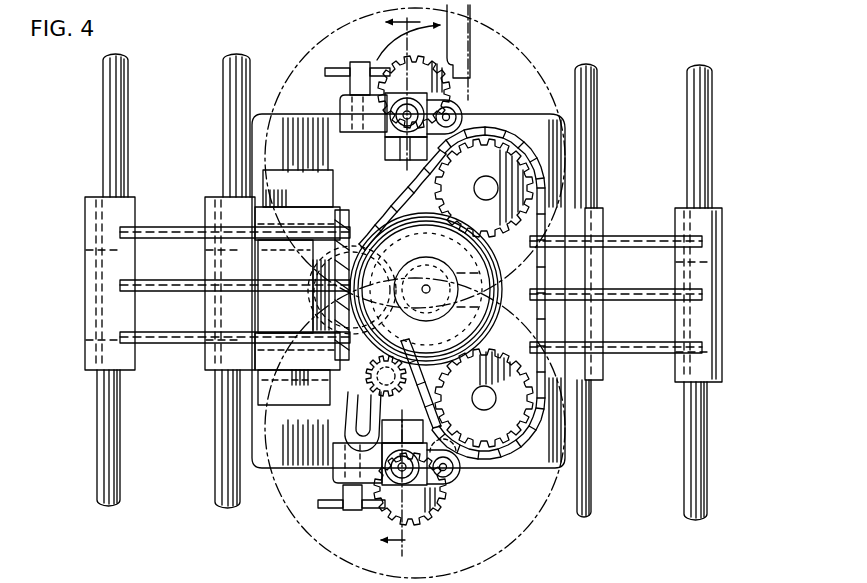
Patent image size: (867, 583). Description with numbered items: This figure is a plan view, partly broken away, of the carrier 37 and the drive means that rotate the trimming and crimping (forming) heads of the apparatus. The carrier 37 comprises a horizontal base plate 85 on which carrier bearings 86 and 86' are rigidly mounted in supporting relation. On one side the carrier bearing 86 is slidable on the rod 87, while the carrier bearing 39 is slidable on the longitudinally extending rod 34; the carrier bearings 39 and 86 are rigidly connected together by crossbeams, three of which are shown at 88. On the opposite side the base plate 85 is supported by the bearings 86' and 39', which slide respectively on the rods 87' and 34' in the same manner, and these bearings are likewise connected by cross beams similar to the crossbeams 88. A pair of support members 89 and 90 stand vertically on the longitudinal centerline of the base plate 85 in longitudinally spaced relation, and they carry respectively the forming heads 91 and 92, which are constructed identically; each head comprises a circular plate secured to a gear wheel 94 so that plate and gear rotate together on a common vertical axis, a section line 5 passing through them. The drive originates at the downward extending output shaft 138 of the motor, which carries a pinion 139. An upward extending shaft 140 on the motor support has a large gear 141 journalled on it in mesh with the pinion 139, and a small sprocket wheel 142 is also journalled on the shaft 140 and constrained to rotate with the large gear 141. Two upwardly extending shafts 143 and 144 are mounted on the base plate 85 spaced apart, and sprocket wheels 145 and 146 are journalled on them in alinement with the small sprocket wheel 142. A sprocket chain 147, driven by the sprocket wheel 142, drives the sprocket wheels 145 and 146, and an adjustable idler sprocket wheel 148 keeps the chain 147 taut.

The section line 5— 5 is at (398, 283).
The longitudinally extending rod 34 is at (94, 280).
The rod 34' is at (680, 292).
The carrier 37 is at (402, 293).
The carrier bearing 39 is at (92, 280).
The carrier bearing 39' is at (714, 295).
The horizontal base plate 85 is at (545, 464).
The carrier bearing 86 is at (222, 296).
The carrier bearing 86' is at (608, 294).
The rod 87 is at (219, 281).
The rod 87' is at (597, 290).
The crossbeams 88 is at (169, 228).
The support member 89 is at (429, 486).
The support member 90 is at (432, 107).
The forming head 91 is at (521, 516).
The forming head 92 is at (523, 56).
The gear wheel 94 is at (368, 140).
The output shaft 138 is at (429, 287).
The pinion 139 is at (431, 309).
The shaft 140 is at (352, 286).
The large gear 141 is at (296, 304).
The small sprocket wheel 142 is at (426, 289).
The shaft 143 is at (489, 184).
The shaft 144 is at (486, 402).
The sprocket wheel 145 is at (483, 164).
The sprocket wheel 146 is at (465, 394).
The sprocket chain 147 is at (582, 262).
The adjustable idler sprocket wheel 148 is at (352, 400).